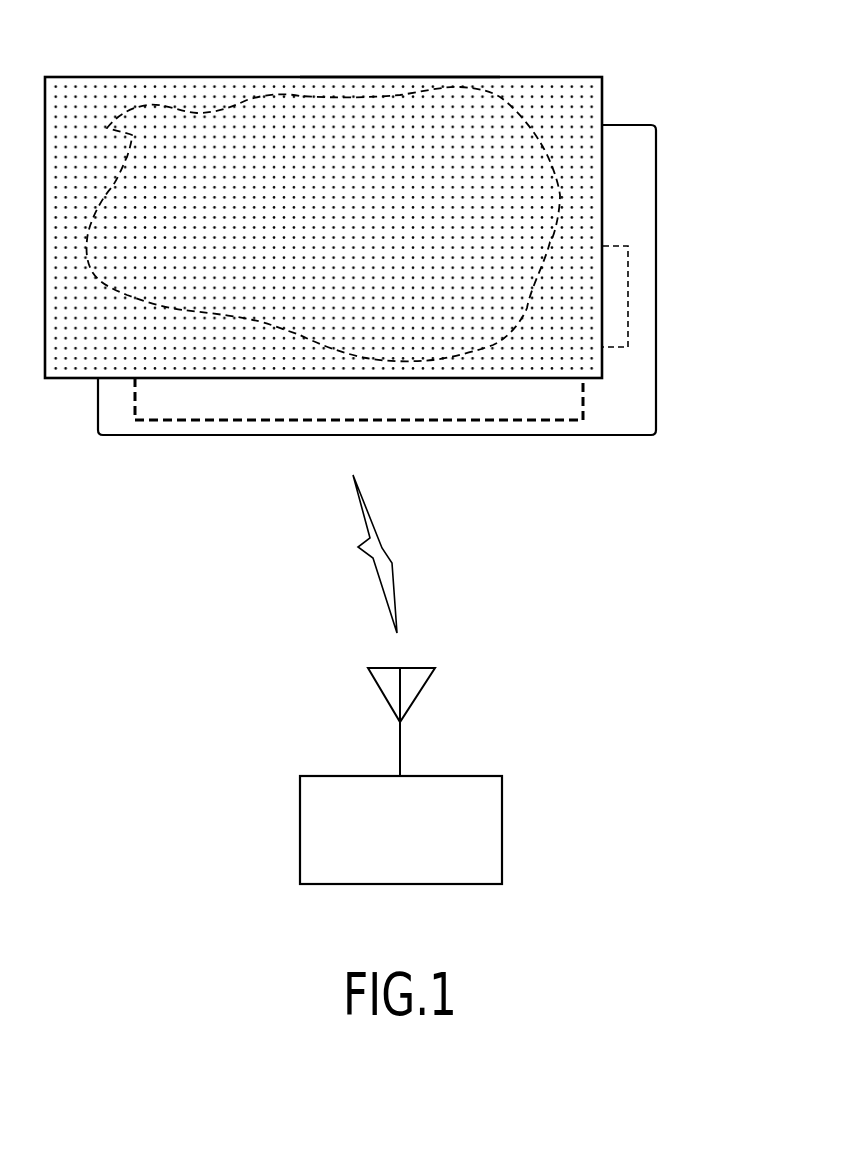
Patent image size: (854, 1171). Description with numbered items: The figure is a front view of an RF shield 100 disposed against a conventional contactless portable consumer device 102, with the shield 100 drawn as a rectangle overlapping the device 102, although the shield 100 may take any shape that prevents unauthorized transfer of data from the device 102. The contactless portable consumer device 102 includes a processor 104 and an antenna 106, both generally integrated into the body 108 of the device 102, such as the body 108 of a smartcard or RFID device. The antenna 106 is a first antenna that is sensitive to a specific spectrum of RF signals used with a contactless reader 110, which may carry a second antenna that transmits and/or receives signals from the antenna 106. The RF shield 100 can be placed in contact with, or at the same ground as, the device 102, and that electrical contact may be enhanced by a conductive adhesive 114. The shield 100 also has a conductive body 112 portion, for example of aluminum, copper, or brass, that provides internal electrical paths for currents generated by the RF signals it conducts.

The RF shield 100 is at (602, 95).
The contactless portable consumer device 102 is at (656, 201).
The processor 104 is at (628, 305).
The antenna 106 is at (582, 395).
The body 108 is at (622, 435).
The contactless reader 110 is at (503, 825).
The conductive body 112 is at (380, 77).
The conductive adhesive 114 is at (235, 107).